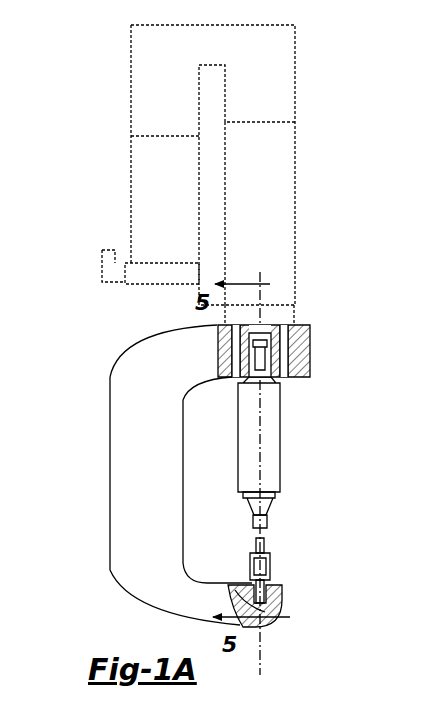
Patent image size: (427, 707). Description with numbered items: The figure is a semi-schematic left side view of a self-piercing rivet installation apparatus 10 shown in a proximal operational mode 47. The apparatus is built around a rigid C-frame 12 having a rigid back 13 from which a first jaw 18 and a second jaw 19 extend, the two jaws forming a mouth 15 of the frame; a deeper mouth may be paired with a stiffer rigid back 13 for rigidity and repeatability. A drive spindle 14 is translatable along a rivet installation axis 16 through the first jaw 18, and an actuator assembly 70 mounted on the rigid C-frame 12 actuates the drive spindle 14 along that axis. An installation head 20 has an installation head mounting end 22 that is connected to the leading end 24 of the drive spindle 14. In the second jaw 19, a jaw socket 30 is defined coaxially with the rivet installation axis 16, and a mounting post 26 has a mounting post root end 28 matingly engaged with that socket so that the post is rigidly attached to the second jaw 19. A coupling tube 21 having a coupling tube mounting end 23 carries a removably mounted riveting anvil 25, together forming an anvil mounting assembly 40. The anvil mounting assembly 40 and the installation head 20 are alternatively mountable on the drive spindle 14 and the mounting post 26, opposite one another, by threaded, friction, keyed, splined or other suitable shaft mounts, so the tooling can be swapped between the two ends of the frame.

The self-piercing rivet installation apparatus 10 is at (100, 125).
The rigid C-frame 12 is at (110, 478).
The rigid back 13 is at (127, 408).
The drive spindle 14 is at (262, 331).
The mouth 15 is at (208, 462).
The rivet installation axis 16 is at (262, 660).
The first jaw 18 is at (311, 342).
The second jaw 19 is at (284, 612).
The installation head 20 is at (282, 408).
The coupling tube 21 is at (270, 556).
The installation head mounting end 22 is at (272, 368).
The coupling tube mounting end 23 is at (252, 571).
The leading end 24 is at (254, 362).
The riveting anvil 25 is at (263, 548).
The mounting post 26 is at (268, 573).
The mounting post root end 28 is at (243, 608).
The jaw socket 30 is at (264, 610).
The anvil mounting assembly 40 is at (246, 553).
The proximal operational mode 47 is at (300, 470).
The actuator assembly 70 is at (300, 70).